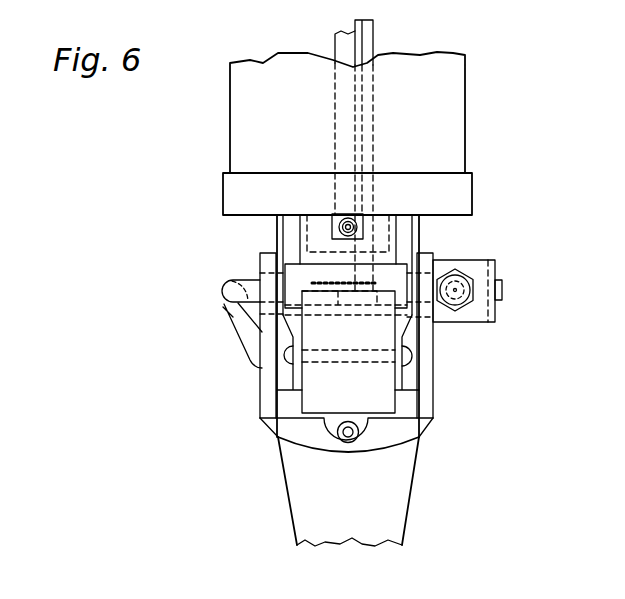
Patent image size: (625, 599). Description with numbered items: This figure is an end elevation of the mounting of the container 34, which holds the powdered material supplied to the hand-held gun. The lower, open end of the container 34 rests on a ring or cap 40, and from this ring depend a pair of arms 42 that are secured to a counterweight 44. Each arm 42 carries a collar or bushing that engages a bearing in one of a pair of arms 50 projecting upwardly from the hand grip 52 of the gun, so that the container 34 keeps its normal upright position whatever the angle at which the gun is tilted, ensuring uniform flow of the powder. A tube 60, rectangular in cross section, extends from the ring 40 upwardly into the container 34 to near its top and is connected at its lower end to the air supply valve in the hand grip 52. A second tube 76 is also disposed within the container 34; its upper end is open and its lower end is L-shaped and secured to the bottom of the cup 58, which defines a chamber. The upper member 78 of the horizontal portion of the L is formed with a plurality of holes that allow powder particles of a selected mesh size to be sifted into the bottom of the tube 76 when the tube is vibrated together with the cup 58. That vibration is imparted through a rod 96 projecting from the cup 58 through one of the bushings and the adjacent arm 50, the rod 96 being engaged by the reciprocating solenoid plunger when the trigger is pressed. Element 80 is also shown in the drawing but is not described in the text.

The container 34 is at (453, 95).
The ring or cap 40 is at (463, 190).
The arms 42 is at (277, 237).
The counterweight 44 is at (323, 400).
The arms 50 is at (268, 403).
The hand grip 52 is at (398, 477).
The cup 58 is at (262, 263).
The tube 60 is at (340, 52).
The second tube 76 is at (367, 35).
The upper member 78 is at (338, 298).
The release lever 80 is at (228, 308).
The rod 96 is at (502, 287).